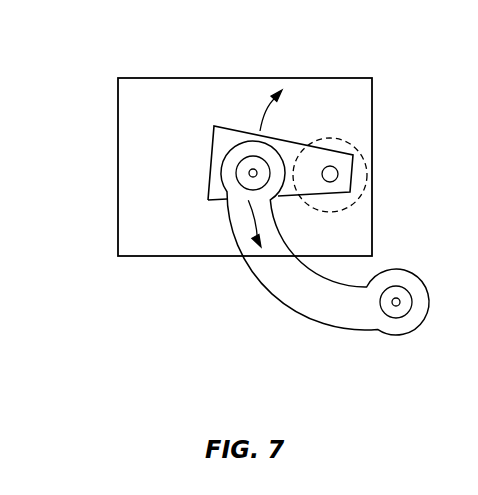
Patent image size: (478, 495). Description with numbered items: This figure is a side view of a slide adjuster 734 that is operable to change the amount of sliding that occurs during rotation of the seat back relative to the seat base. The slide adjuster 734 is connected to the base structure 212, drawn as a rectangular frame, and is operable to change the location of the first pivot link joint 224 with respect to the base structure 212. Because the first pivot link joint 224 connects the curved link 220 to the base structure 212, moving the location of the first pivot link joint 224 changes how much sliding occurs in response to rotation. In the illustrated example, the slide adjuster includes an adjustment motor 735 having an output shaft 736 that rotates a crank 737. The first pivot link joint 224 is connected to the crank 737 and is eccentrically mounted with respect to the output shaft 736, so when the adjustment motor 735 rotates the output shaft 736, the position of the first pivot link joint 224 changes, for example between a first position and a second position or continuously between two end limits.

The slide adjuster 734 is at (93, 84).
The base structure 212 is at (125, 138).
The crank 737 is at (233, 127).
The output shaft 736 is at (355, 150).
The adjustment motor 735 is at (357, 199).
The link 220 is at (357, 329).
The first pivot link joint 224 is at (242, 182).